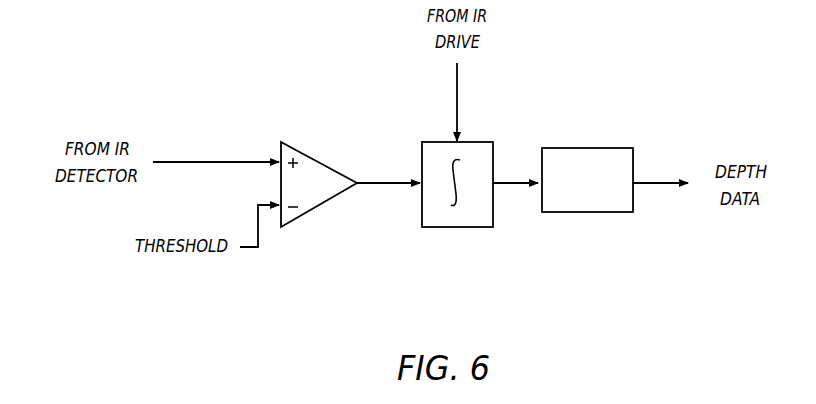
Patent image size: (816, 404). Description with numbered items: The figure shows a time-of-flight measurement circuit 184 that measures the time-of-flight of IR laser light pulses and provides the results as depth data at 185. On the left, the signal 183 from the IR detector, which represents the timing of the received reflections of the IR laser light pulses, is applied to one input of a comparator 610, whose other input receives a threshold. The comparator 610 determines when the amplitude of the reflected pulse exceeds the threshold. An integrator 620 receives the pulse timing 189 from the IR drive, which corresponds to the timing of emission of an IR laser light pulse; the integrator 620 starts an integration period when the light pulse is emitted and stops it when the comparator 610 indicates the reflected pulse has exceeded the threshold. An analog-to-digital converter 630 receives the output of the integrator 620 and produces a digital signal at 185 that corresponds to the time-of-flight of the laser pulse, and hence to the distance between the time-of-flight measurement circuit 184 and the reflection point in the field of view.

The signal 183 is at (219, 158).
The comparator 610 is at (328, 160).
The pulse timing 189 is at (456, 92).
The integrator 620 is at (453, 228).
The analog-to-digital converter 630 is at (583, 213).
The depth data 185 is at (664, 182).
The time-of-flight measurement circuit 184 is at (634, 319).